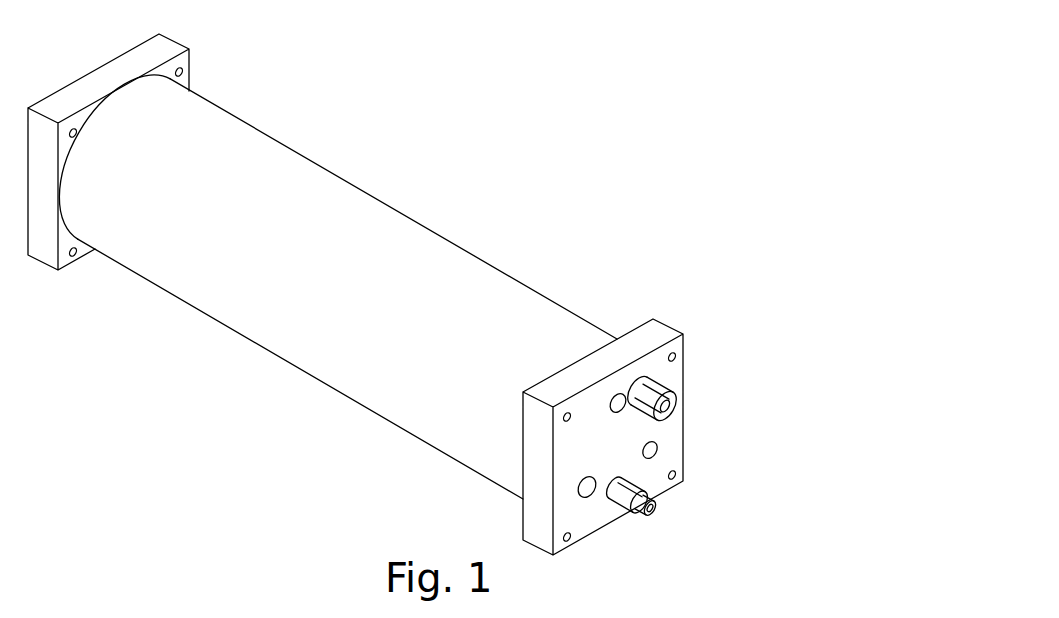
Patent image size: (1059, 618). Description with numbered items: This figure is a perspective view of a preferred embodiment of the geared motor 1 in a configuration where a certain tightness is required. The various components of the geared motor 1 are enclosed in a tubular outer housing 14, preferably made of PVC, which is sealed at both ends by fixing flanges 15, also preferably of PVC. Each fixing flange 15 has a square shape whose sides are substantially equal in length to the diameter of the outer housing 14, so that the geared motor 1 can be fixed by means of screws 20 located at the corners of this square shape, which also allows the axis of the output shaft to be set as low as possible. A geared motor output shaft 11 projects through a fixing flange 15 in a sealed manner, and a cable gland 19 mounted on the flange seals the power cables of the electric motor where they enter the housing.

The geared motor 1 is at (410, 292).
The tubular outer housing 14 is at (357, 370).
The fixing flange 15 is at (163, 52).
The screw 20 is at (673, 357).
The cable gland 19 is at (675, 400).
The geared motor output shaft 11 is at (655, 506).